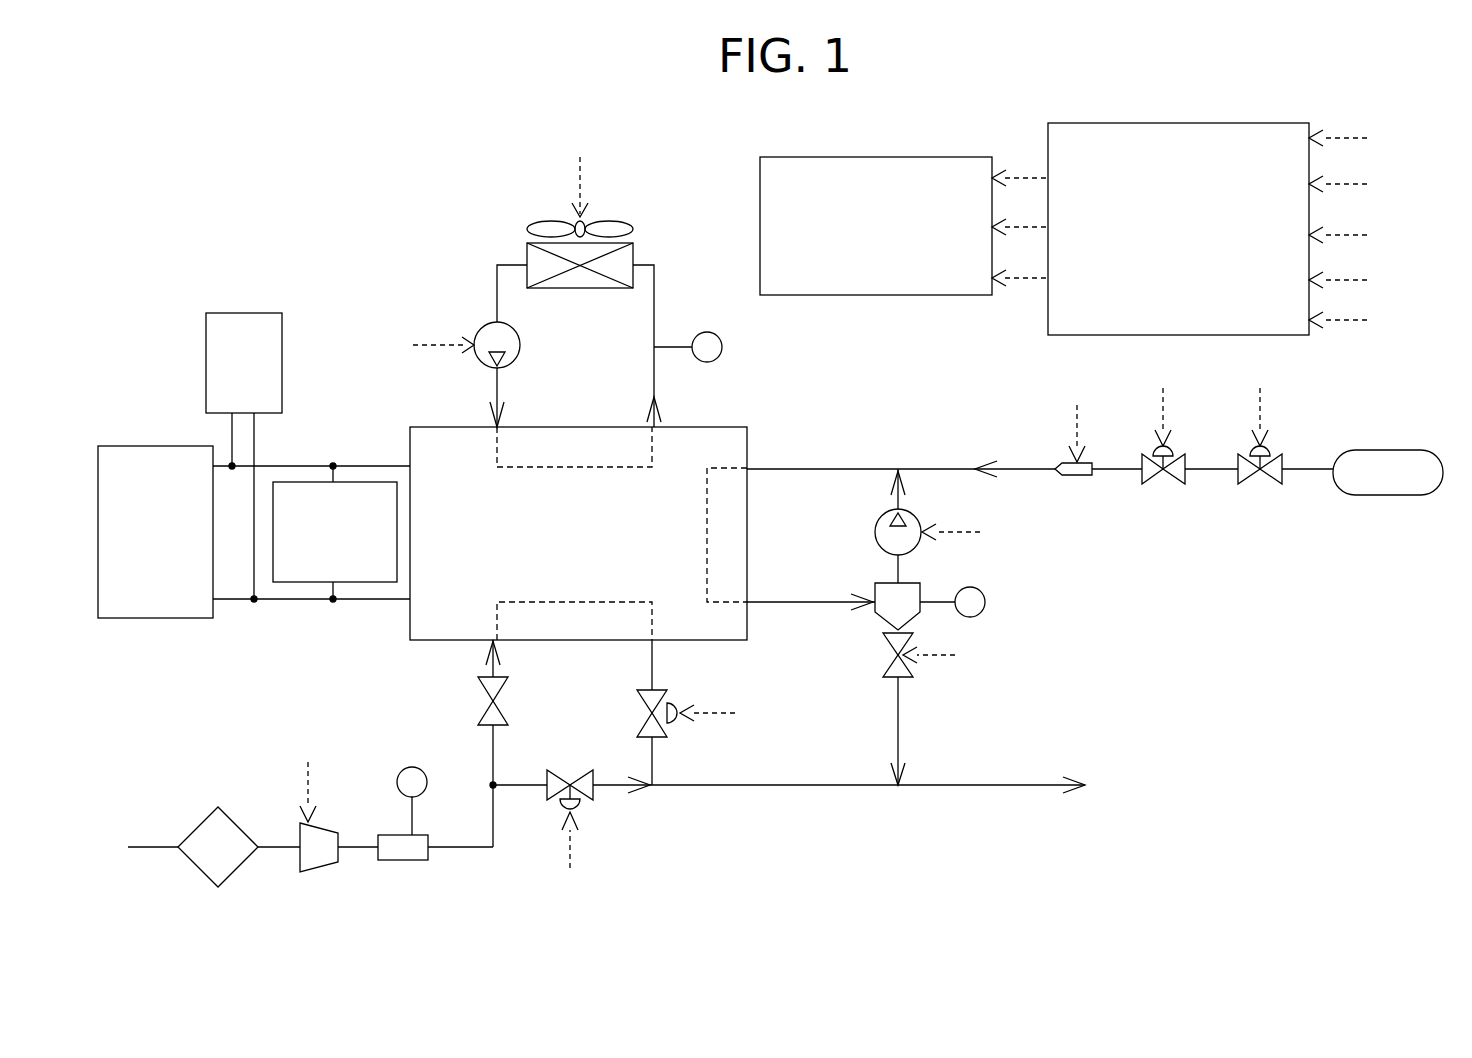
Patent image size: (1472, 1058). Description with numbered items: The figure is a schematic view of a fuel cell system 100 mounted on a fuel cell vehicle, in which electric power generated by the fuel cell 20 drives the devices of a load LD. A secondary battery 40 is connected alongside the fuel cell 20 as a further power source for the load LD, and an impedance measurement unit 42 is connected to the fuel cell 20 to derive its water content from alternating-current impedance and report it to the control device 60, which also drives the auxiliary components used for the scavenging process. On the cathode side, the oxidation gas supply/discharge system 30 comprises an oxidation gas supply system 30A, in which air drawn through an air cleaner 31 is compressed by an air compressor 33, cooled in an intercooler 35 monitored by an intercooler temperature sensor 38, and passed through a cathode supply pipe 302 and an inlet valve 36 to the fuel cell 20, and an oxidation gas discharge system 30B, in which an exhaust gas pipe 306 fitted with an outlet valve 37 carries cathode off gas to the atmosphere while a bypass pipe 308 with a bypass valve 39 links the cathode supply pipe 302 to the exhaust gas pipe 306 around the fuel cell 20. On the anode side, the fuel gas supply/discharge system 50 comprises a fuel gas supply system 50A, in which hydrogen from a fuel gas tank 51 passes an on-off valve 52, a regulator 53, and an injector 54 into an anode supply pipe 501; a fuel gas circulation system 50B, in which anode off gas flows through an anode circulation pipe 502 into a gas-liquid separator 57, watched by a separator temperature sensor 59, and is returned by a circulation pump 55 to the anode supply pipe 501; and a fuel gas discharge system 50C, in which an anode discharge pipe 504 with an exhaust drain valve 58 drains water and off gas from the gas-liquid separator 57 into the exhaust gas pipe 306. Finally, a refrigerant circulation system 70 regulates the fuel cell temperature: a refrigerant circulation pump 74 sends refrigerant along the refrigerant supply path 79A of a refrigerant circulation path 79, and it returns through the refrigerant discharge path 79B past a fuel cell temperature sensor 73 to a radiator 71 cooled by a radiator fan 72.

The fuel cell system 100 is at (228, 112).
The fuel cell 20 is at (748, 448).
The oxidation gas supply/discharge system 30 is at (190, 670).
The oxidation gas supply system 30A is at (218, 745).
The oxidation gas discharge system 30B is at (705, 832).
The air cleaner 31 is at (200, 825).
The air compressor 33 is at (318, 825).
The intercooler 35 is at (408, 862).
The inlet valve 36 is at (485, 692).
The outlet valve 37 is at (637, 702).
The intercooler temperature sensor 38 is at (405, 768).
The bypass valve 39 is at (557, 800).
The cathode supply pipe 302 is at (467, 850).
The exhaust gas pipe 306 is at (655, 663).
The bypass pipe 308 is at (622, 790).
The secondary battery 40 is at (162, 446).
The impedance measurement unit 42 is at (350, 584).
The load LD is at (243, 313).
The fuel gas supply/discharge system 50 is at (1402, 385).
The fuel gas supply system 50A is at (1212, 565).
The fuel gas circulation system 50B is at (850, 528).
The fuel gas discharge system 50C is at (1018, 668).
The fuel gas tank 51 is at (1388, 450).
The on-off valve 52 is at (1270, 482).
The regulator 53 is at (1173, 482).
The injector 54 is at (1078, 478).
The circulation pump 55 is at (912, 552).
The gas-liquid separator 57 is at (875, 620).
The exhaust drain valve 58 is at (912, 672).
The separator temperature sensor 59 is at (976, 617).
The anode supply pipe 501 is at (1016, 466).
The anode circulation pipe 502 is at (809, 602).
The anode discharge pipe 504 is at (895, 737).
The control device 60 is at (1234, 97).
The refrigerant circulation system 70 is at (440, 220).
The radiator 71 is at (633, 243).
The radiator fan 72 is at (545, 222).
The fuel cell temperature sensor 73 is at (718, 336).
The refrigerant circulation pump 74 is at (520, 347).
The refrigerant circulation path 79 is at (666, 312).
The refrigerant supply path 79A is at (495, 286).
The refrigerant discharge path 79B is at (655, 380).